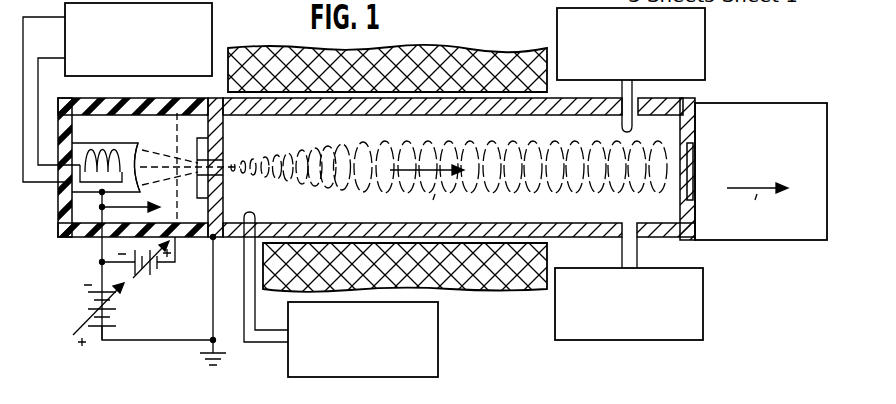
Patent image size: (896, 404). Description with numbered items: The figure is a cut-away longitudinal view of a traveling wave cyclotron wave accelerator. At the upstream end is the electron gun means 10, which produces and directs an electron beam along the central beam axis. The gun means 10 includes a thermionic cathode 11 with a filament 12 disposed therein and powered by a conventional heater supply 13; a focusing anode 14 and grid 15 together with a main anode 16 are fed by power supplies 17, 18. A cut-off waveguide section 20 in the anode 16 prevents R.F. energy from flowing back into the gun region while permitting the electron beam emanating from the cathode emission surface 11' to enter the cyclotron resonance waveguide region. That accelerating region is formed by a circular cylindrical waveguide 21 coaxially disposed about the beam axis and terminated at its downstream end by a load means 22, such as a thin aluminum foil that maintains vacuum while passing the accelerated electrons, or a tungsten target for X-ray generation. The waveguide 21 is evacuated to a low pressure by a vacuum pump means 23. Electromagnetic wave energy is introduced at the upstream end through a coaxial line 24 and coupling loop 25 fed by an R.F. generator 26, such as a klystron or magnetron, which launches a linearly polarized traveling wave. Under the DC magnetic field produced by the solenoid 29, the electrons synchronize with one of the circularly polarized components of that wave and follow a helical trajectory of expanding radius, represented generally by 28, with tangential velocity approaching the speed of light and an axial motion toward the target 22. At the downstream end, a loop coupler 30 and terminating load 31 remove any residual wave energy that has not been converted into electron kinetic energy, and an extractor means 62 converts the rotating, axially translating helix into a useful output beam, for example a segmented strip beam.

The electron gun means 10 is at (75, 239).
The thermionic cathode 11 is at (106, 153).
The cathode emission surface 11' is at (190, 153).
The filament 12 is at (93, 152).
The heater supply 13 is at (203, 30).
The focusing anode 14 is at (150, 131).
The grid 15 is at (180, 128).
The main anode 16 is at (202, 237).
The power supply 17 is at (163, 267).
The power supply 18 is at (82, 310).
The cut-off waveguide section 20 is at (214, 162).
The circular cylindrical waveguide 21 is at (555, 98).
The load means 22 is at (693, 180).
The vacuum pump means 23 is at (565, 323).
The coaxial line 24 is at (262, 343).
The coupling loop 25 is at (248, 221).
The R.F. generator 26 is at (433, 356).
The helical trajectory 28 is at (617, 162).
The solenoid 29 is at (417, 60).
The loop coupler 30 is at (618, 130).
The terminating load 31 is at (702, 30).
The extractor means 62 is at (752, 118).